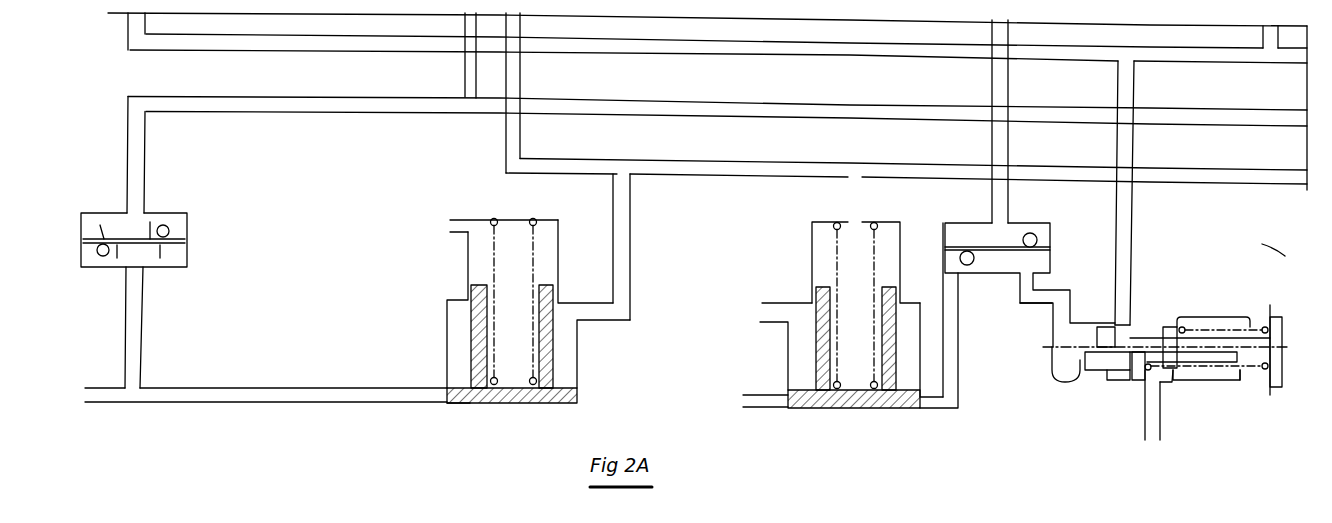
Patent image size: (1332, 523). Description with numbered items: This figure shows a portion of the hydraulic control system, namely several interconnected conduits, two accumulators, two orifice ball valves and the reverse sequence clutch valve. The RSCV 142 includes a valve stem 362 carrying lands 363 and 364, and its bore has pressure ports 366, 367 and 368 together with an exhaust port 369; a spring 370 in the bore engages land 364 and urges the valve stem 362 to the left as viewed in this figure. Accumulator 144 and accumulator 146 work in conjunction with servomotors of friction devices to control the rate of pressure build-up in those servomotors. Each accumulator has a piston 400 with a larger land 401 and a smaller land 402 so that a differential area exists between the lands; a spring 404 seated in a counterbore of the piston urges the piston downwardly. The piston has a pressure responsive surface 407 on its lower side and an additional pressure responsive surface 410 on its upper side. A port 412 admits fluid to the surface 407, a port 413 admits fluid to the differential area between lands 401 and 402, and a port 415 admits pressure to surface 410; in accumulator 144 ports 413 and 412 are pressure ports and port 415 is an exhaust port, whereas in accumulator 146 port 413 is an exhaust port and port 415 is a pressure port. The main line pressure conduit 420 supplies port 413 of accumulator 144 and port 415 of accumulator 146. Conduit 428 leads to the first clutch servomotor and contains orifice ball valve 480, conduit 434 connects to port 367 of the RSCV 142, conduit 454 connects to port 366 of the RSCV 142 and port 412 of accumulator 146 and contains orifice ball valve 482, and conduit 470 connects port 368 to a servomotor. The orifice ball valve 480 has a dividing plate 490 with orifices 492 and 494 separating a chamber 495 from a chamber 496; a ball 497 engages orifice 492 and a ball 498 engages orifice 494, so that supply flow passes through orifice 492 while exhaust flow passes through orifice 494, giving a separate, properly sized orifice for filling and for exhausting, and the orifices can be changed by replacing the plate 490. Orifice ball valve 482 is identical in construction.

The RSCV 142 is at (1230, 300).
The accumulator 144 is at (464, 250).
The accumulator 146 is at (776, 348).
The valve stem 362 is at (1168, 325).
The land 363 is at (1074, 373).
The land 364 is at (1138, 381).
The pressure port 366 is at (1062, 326).
The pressure port 367 is at (1126, 324).
The pressure port 368 is at (1162, 384).
The exhaust port 369 is at (1214, 384).
The spring 370 is at (1268, 317).
The piston 400 is at (515, 406).
The land 401 is at (578, 393).
The land 402 is at (554, 294).
The spring 404 is at (495, 218).
The pressure responsive surface 407 is at (462, 405).
The pressure responsive surface 410 is at (550, 286).
The port 412 is at (447, 406).
The port 413 is at (583, 308).
The port 415 is at (452, 226).
The conduit 420 is at (520, 80).
The conduit 428 is at (128, 122).
The conduit 434 is at (196, 52).
The conduit 454 is at (992, 80).
The conduit 470 is at (1160, 436).
The orifice ball valve 480 is at (76, 218).
The orifice ball valve 482 is at (1058, 236).
The dividing plate 490 is at (146, 226).
The orifice 492 is at (104, 239).
The orifice 494 is at (160, 247).
The chamber 495 is at (150, 222).
The chamber 496 is at (117, 260).
The ball 497 is at (96, 249).
The ball 498 is at (170, 230).